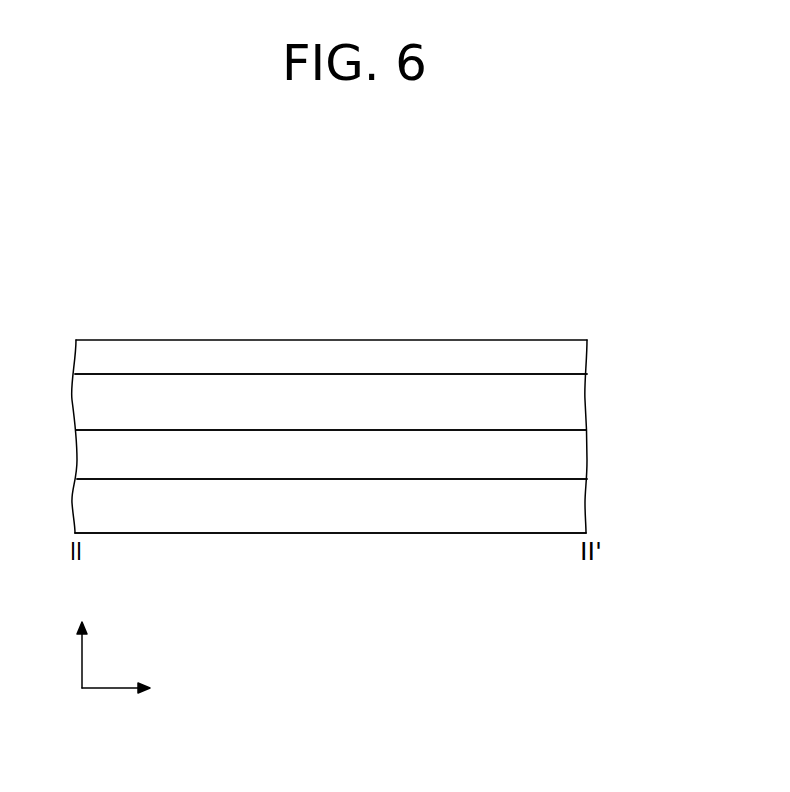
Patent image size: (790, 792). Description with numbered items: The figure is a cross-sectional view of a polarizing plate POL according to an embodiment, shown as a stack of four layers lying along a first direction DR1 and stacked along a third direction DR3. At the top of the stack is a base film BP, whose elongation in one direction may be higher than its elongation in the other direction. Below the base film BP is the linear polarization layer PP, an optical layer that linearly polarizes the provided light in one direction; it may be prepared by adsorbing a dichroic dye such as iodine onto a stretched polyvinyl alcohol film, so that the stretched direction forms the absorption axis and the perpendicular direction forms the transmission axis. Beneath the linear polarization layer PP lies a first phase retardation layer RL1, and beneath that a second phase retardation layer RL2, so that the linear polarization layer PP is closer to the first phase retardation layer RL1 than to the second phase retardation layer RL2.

The polarizing plate POL is at (549, 272).
The base film BP is at (578, 357).
The linear polarization layer PP is at (575, 406).
The first phase retardation layer RL1 is at (578, 456).
The second phase retardation layer RL2 is at (575, 507).
The first direction DR1 is at (137, 690).
The third direction DR3 is at (82, 642).